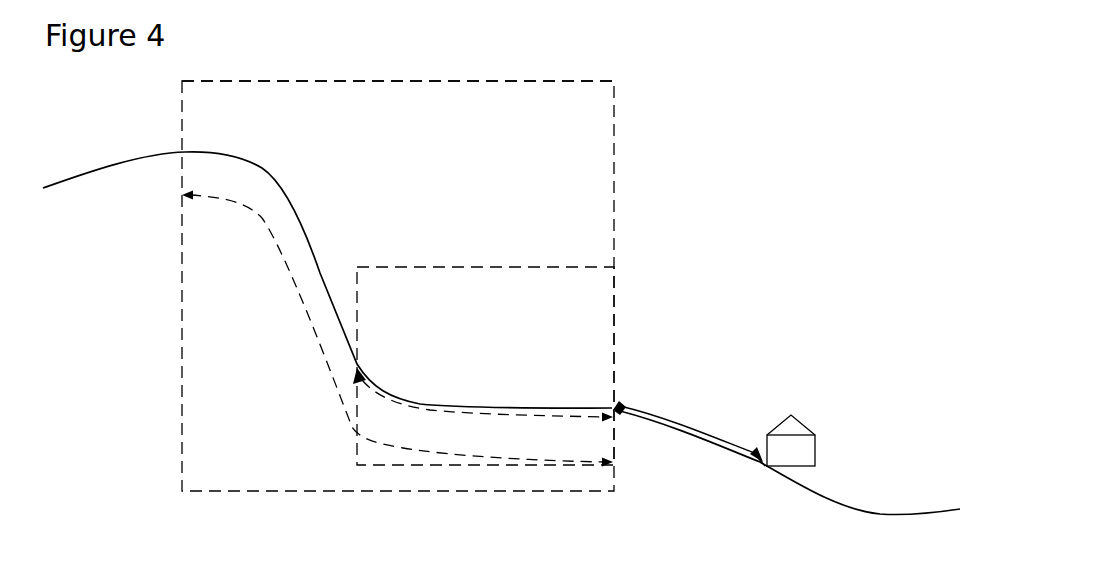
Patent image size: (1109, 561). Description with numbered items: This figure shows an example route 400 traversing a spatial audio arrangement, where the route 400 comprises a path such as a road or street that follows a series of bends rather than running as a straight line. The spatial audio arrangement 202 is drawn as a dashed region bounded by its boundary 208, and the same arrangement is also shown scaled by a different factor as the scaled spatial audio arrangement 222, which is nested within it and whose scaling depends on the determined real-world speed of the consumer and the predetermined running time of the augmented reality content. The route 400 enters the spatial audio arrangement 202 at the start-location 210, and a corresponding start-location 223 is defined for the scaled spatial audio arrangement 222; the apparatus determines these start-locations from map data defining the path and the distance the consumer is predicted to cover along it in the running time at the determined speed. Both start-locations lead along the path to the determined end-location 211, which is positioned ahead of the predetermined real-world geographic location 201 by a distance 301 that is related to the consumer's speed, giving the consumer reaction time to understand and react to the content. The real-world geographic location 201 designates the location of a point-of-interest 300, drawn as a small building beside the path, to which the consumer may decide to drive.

The spatial audio arrangement 202 is at (277, 81).
The boundary 208 is at (392, 81).
The route 400 is at (247, 160).
The start-location 210 is at (182, 158).
The scaled spatial audio arrangement 222 is at (450, 268).
The start-location 223 is at (357, 364).
The end-location 211 is at (621, 403).
The distance 301 is at (722, 440).
The point-of-interest 300 is at (808, 450).
The real-world geographic location 201 is at (765, 465).